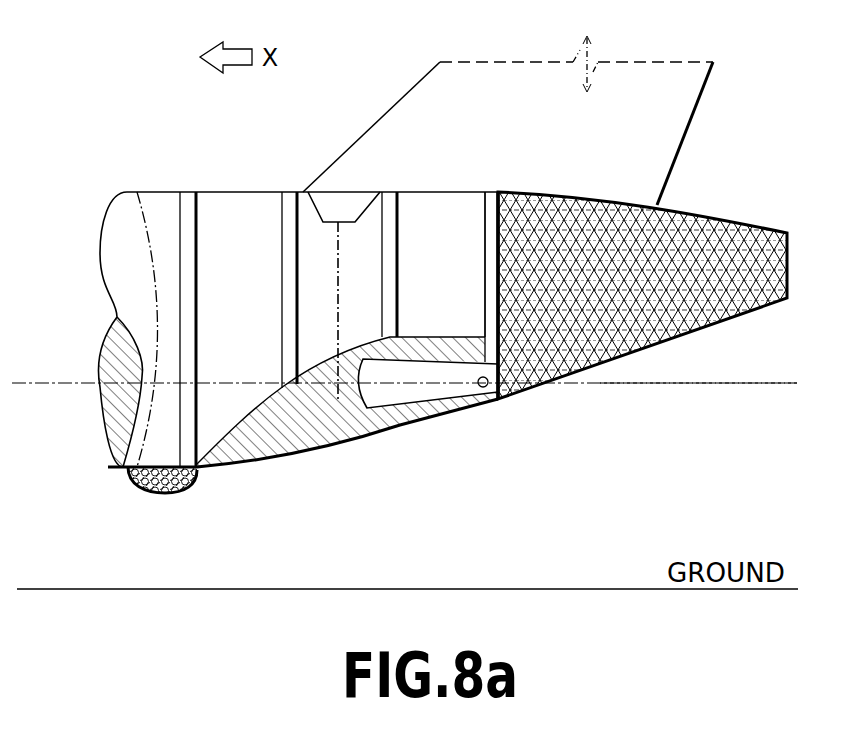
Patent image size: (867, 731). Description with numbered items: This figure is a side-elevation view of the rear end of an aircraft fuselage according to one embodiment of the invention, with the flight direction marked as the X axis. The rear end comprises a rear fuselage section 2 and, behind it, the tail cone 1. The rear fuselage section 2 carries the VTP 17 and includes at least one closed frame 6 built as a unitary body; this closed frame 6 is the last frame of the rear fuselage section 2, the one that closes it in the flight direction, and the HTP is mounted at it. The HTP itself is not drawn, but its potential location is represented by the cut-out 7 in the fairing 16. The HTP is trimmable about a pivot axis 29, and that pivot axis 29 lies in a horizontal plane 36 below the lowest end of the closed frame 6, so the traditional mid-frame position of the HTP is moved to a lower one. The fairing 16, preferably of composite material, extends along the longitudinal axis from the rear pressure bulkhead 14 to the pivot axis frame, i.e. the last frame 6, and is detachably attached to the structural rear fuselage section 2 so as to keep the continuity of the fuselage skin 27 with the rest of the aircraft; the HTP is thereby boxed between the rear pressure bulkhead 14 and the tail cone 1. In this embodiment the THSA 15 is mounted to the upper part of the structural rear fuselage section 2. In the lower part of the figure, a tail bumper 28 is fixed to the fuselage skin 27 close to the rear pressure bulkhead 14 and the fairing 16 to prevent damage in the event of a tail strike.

The tail cone 1 is at (703, 213).
The rear fuselage section 2 is at (227, 275).
The closed frame 6 is at (490, 260).
The cut-out 7 is at (445, 392).
The rear pressure bulkhead 14 is at (163, 283).
The THSA 15 is at (338, 322).
The fairing 16 is at (355, 420).
The VTP 17 is at (508, 120).
The fuselage skin 27 is at (110, 467).
The tail bumper 28 is at (157, 490).
The pivot axis 29 is at (490, 387).
The horizontal plane 36 is at (740, 383).